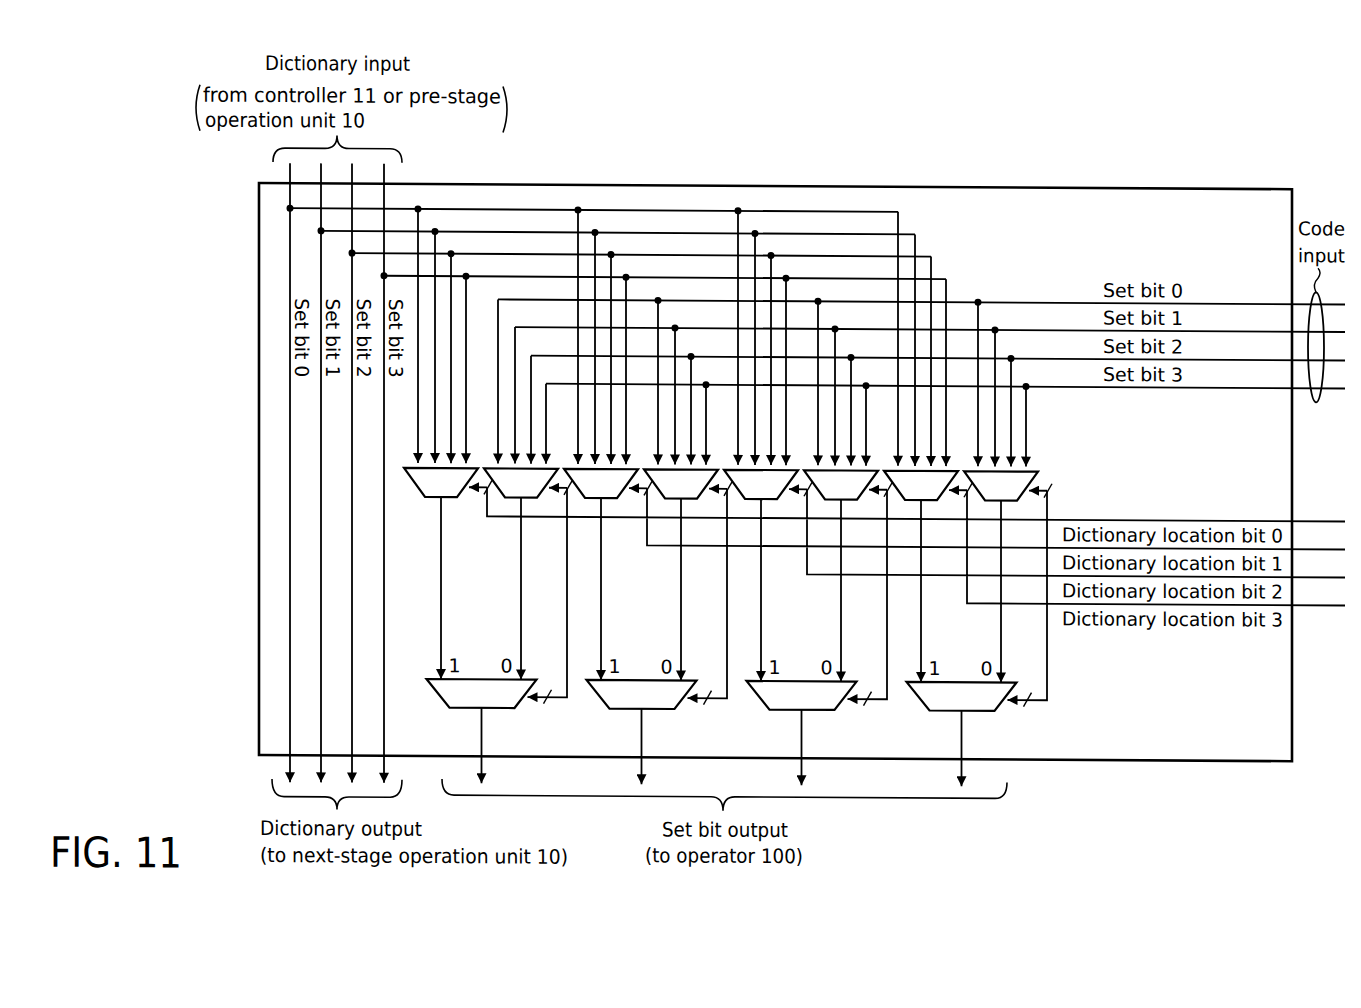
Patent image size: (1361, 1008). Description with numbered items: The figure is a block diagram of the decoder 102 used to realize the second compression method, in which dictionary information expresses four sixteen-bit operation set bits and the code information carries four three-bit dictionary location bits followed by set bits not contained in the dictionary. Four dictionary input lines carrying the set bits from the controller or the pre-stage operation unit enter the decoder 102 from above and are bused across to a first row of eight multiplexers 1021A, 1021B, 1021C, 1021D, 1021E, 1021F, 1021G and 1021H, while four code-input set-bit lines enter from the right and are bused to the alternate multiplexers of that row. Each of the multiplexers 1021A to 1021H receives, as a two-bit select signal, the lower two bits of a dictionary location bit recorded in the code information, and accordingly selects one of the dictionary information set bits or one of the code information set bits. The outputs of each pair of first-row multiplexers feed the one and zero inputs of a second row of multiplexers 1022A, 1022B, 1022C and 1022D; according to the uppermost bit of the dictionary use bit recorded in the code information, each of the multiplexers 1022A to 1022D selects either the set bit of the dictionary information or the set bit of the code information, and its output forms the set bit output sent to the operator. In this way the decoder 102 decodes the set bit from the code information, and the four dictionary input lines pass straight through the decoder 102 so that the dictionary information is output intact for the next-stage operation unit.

The decoder 102 is at (719, 184).
The multiplexer 1021A is at (449, 497).
The multiplexer 1021B is at (507, 497).
The multiplexer 1021C is at (609, 497).
The multiplexer 1021D is at (667, 497).
The multiplexer 1021E is at (769, 497).
The multiplexer 1021F is at (827, 497).
The multiplexer 1021G is at (929, 497).
The multiplexer 1021H is at (987, 497).
The multiplexer 1022A is at (502, 707).
The multiplexer 1022B is at (662, 707).
The multiplexer 1022C is at (822, 707).
The multiplexer 1022D is at (982, 707).